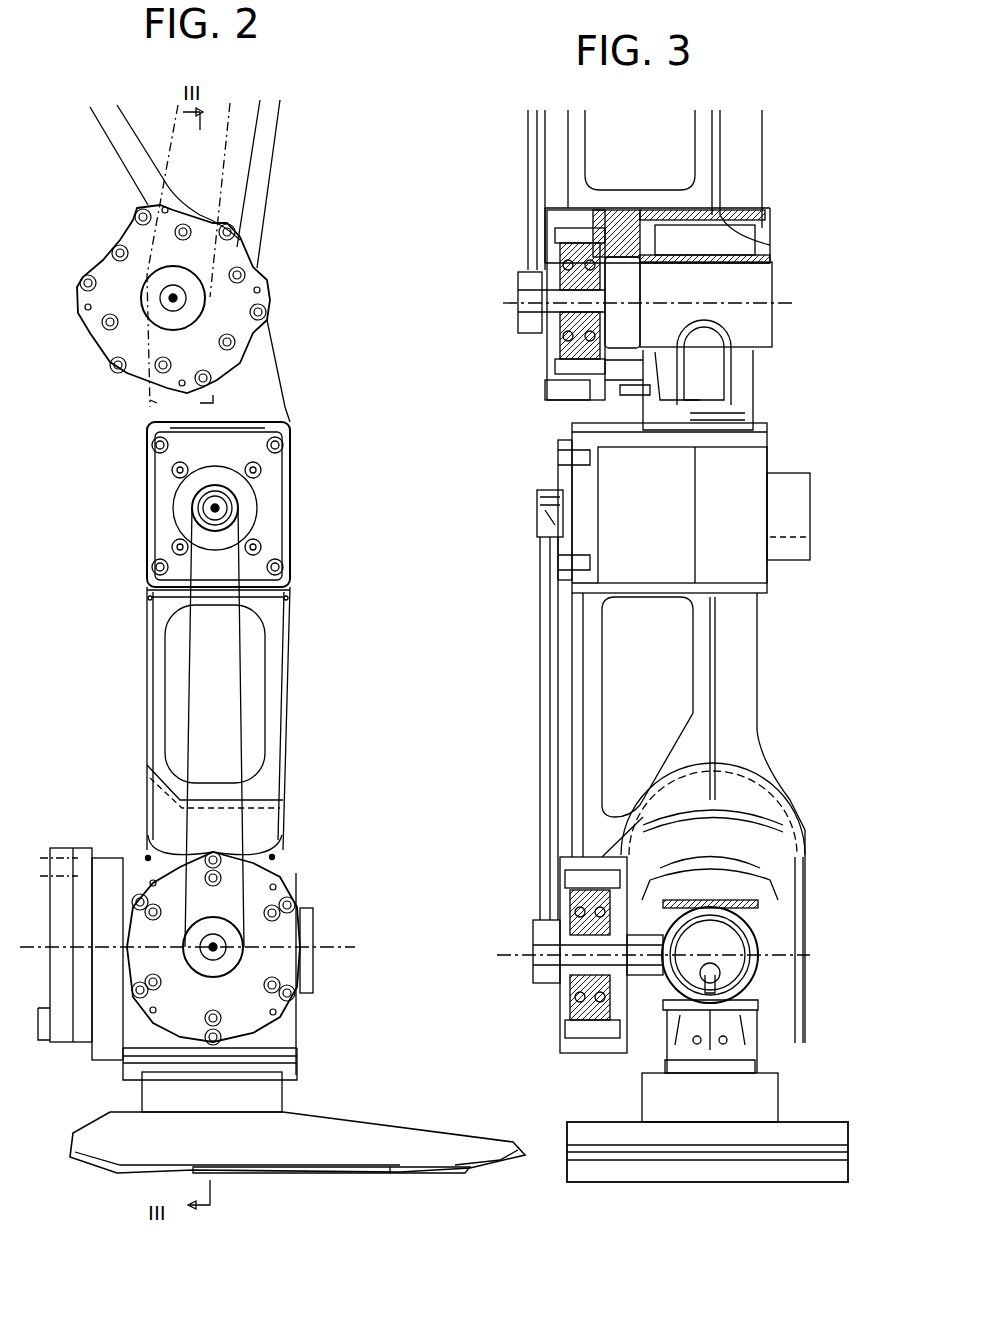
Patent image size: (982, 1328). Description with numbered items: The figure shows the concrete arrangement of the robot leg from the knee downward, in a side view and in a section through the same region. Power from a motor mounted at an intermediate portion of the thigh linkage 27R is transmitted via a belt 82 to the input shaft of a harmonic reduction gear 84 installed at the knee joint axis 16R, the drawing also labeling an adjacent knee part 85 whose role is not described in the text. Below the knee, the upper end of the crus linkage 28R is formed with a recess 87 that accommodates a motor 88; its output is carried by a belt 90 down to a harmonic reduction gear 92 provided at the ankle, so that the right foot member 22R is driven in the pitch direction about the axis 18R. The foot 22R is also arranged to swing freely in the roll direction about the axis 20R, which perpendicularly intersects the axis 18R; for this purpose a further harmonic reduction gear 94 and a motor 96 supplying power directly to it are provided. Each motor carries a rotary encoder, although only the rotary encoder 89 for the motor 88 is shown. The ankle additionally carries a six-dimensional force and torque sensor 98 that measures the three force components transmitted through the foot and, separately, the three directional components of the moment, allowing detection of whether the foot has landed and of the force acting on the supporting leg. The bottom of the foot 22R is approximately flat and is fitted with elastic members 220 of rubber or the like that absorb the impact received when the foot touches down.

In FIG. 3, the knee joint axis 16R is at (780, 303).
In FIG. 3, the ankle pitch axis 18R is at (505, 947).
In FIG. 2, the ankle roll axis 20R is at (340, 960).
In FIG. 2, the right foot member 22R is at (390, 1137).
In FIG. 3, the right foot member 22R is at (814, 1126).
In FIG. 2, the thigh linkage 27R is at (277, 145).
In FIG. 3, the thigh linkage 27R is at (710, 148).
In FIG. 2, the crus linkage 28R is at (272, 688).
In FIG. 3, the crus linkage 28R is at (745, 683).
In FIG. 2, the belt 82 is at (237, 230).
In FIG. 3, the belt 82 is at (530, 130).
In FIG. 2, the harmonic reduction gear 84 is at (123, 337).
In FIG. 3, the harmonic reduction gear 84 is at (542, 352).
In FIG. 3, the coupling shaft 85 is at (740, 290).
In FIG. 3, the recess 87 is at (772, 420).
In FIG. 2, the motor 88 is at (252, 500).
In FIG. 3, the motor 88 is at (745, 478).
In FIG. 3, the rotary encoder 89 is at (795, 503).
In FIG. 2, the belt 90 is at (255, 608).
In FIG. 3, the belt 90 is at (540, 645).
In FIG. 2, the harmonic reduction gear 92 is at (270, 933).
In FIG. 3, the harmonic reduction gear 92 is at (555, 995).
In FIG. 2, the harmonic reduction gear 94 is at (100, 880).
In FIG. 3, the motor 96 is at (725, 930).
In FIG. 2, the six-dimensional force and torque sensor 98 is at (260, 1098).
In FIG. 3, the six-dimensional force and torque sensor 98 is at (755, 1095).
In FIG. 2, the elastic members 220 is at (392, 1172).